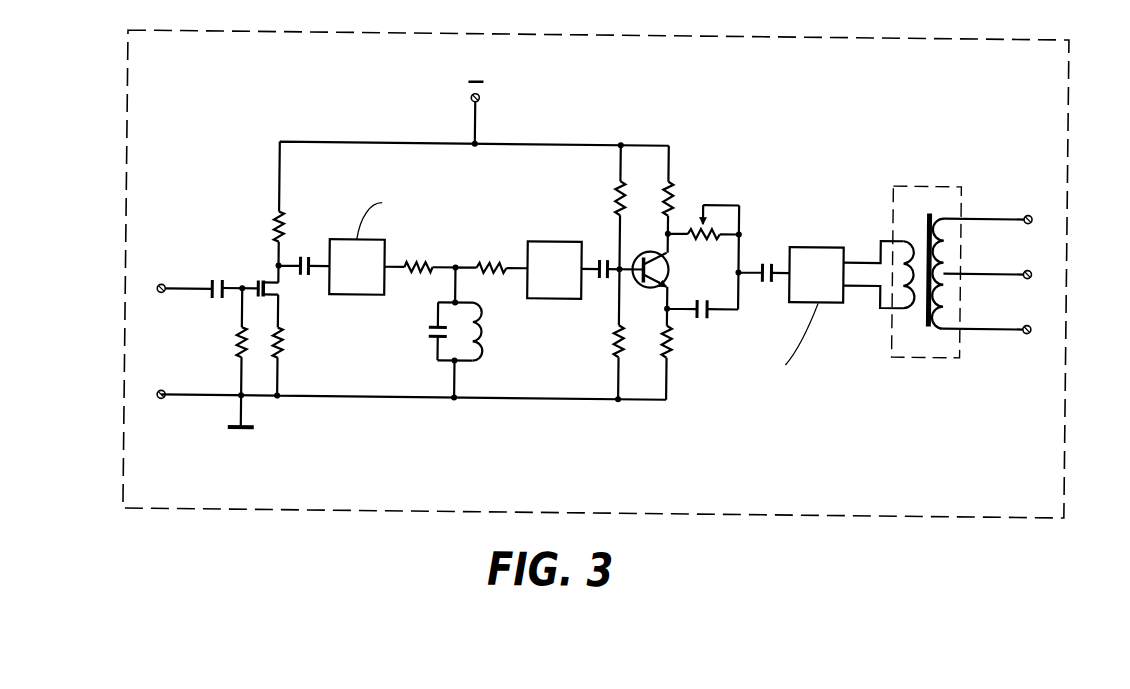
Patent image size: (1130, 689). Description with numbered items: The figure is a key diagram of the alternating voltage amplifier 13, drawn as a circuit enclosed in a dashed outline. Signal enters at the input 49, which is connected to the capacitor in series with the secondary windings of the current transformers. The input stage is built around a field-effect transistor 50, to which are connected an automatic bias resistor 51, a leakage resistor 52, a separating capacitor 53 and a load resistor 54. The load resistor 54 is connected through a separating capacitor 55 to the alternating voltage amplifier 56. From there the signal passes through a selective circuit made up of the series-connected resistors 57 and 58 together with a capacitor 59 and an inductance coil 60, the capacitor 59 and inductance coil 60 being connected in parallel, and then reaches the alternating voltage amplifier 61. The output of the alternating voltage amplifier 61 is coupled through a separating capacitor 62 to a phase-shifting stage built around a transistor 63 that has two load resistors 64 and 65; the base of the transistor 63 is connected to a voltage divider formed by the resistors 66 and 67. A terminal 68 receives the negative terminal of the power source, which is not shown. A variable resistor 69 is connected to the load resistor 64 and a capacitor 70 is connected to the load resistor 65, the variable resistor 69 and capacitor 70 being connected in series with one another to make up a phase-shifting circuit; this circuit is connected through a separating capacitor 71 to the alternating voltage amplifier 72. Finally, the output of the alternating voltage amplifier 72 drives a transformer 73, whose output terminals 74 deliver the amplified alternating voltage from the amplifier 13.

The alternating voltage amplifier 13 is at (1074, 152).
The input 49 is at (160, 297).
The field-effect transistor 50 is at (259, 280).
The automatic bias resistor 51 is at (284, 340).
The leakage resistor 52 is at (243, 338).
The separating capacitor 53 is at (213, 281).
The load resistor 54 is at (278, 229).
The separating capacitor 55 is at (306, 255).
The alternating voltage amplifier 56 is at (425, 243).
The resistor 57 is at (432, 258).
The resistor 58 is at (504, 258).
The capacitor 59 is at (433, 334).
The inductance coil 60 is at (484, 333).
The alternating voltage amplifier 61 is at (554, 270).
The separating capacitor 62 is at (604, 256).
The transistor 63 is at (651, 283).
The load resistor 64 is at (672, 194).
The load resistor 65 is at (673, 336).
The resistor 66 is at (617, 196).
The resistor 67 is at (617, 339).
The terminal 68 is at (471, 95).
The variable resistor 69 is at (700, 234).
The capacitor 70 is at (719, 309).
The separating capacitor 71 is at (771, 254).
The alternating voltage amplifier 72 is at (808, 314).
The transformer 73 is at (950, 171).
The output terminals 74 is at (1042, 290).